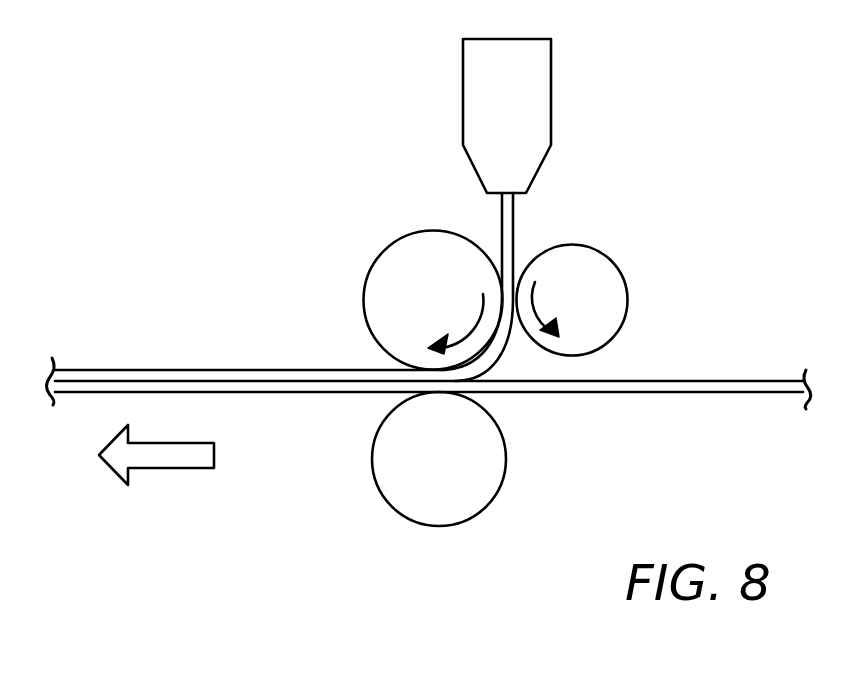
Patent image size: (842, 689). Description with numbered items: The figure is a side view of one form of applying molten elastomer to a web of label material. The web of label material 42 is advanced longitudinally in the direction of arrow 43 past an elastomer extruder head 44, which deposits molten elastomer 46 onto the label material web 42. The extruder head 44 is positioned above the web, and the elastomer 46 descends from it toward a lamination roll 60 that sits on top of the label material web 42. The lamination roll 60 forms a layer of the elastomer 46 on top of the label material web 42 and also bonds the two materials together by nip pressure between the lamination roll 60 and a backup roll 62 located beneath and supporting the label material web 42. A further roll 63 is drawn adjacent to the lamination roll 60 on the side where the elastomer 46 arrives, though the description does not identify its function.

The web of label material 42 is at (235, 392).
The arrow 43 is at (157, 453).
The elastomer extruder head 44 is at (487, 65).
The molten elastomer 46 is at (497, 222).
The lamination roll 60 is at (413, 250).
The backup roll 62 is at (398, 490).
The secondary roller 63 is at (597, 280).